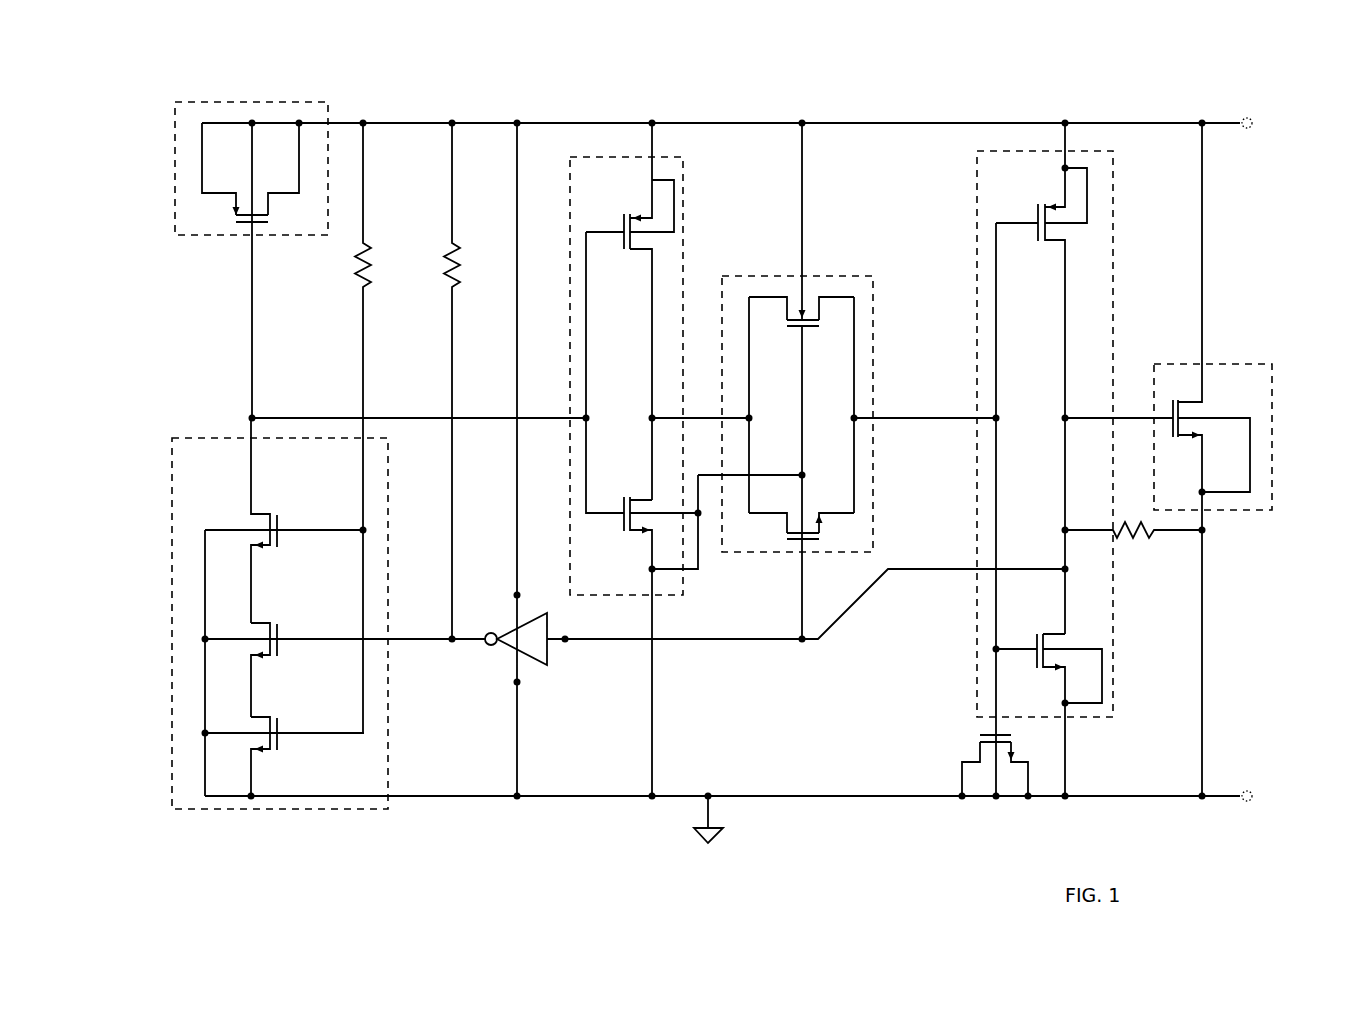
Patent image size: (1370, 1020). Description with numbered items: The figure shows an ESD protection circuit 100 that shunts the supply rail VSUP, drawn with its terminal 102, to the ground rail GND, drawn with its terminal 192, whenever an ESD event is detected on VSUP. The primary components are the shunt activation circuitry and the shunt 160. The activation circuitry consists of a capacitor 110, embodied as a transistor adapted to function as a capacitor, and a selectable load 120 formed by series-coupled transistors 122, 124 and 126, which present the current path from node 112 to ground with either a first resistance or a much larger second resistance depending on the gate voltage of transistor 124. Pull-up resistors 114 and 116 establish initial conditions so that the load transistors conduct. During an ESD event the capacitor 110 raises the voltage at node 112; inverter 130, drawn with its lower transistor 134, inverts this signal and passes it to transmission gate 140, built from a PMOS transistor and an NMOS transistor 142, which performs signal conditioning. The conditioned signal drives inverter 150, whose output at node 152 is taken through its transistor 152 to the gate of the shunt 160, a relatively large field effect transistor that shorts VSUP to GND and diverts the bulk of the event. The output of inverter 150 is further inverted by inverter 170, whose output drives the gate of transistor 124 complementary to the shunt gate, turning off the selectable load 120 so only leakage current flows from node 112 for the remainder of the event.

The ESD protection circuit 100 is at (143, 58).
The supply voltage terminal VSUP 102 is at (1258, 124).
The capacitor 110 is at (172, 166).
The node 112 is at (247, 416).
The pull-up resistor 114 is at (374, 242).
The pull-up resistor 116 is at (440, 287).
The selectable load 120 is at (170, 635).
The transistor 122 is at (285, 512).
The transistor 124 is at (285, 612).
The transistor 126 is at (285, 708).
The inverter 130 is at (684, 172).
The mirror transistor 134 is at (648, 425).
The transmission gate 140 is at (728, 272).
The pair transistor 142 is at (854, 425).
The inverter 150 is at (1116, 194).
The node 152 is at (1061, 423).
The shunt 160 is at (1276, 440).
The inverter 170 is at (548, 664).
The ground terminal GND 192 is at (1258, 797).